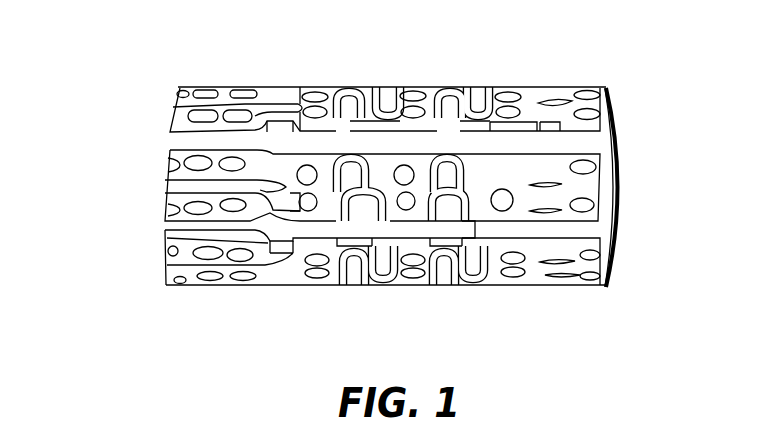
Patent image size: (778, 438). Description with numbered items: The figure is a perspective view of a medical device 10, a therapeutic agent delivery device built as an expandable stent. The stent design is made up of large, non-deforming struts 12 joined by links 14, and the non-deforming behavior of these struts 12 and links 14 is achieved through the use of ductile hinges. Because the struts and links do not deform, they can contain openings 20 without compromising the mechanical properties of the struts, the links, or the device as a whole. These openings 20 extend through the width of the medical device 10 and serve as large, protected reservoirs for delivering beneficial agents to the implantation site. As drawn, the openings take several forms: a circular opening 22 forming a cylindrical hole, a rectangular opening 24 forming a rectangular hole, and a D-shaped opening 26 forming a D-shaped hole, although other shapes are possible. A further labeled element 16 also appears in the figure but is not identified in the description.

The medical device 10 is at (148, 256).
The struts 12 is at (170, 190).
The links 14 is at (288, 200).
The connector strut 16 is at (460, 218).
The openings 20 is at (176, 109).
The circular opening 22 is at (307, 165).
The rectangular opening 24 is at (587, 166).
The D-shaped opening 26 is at (405, 166).